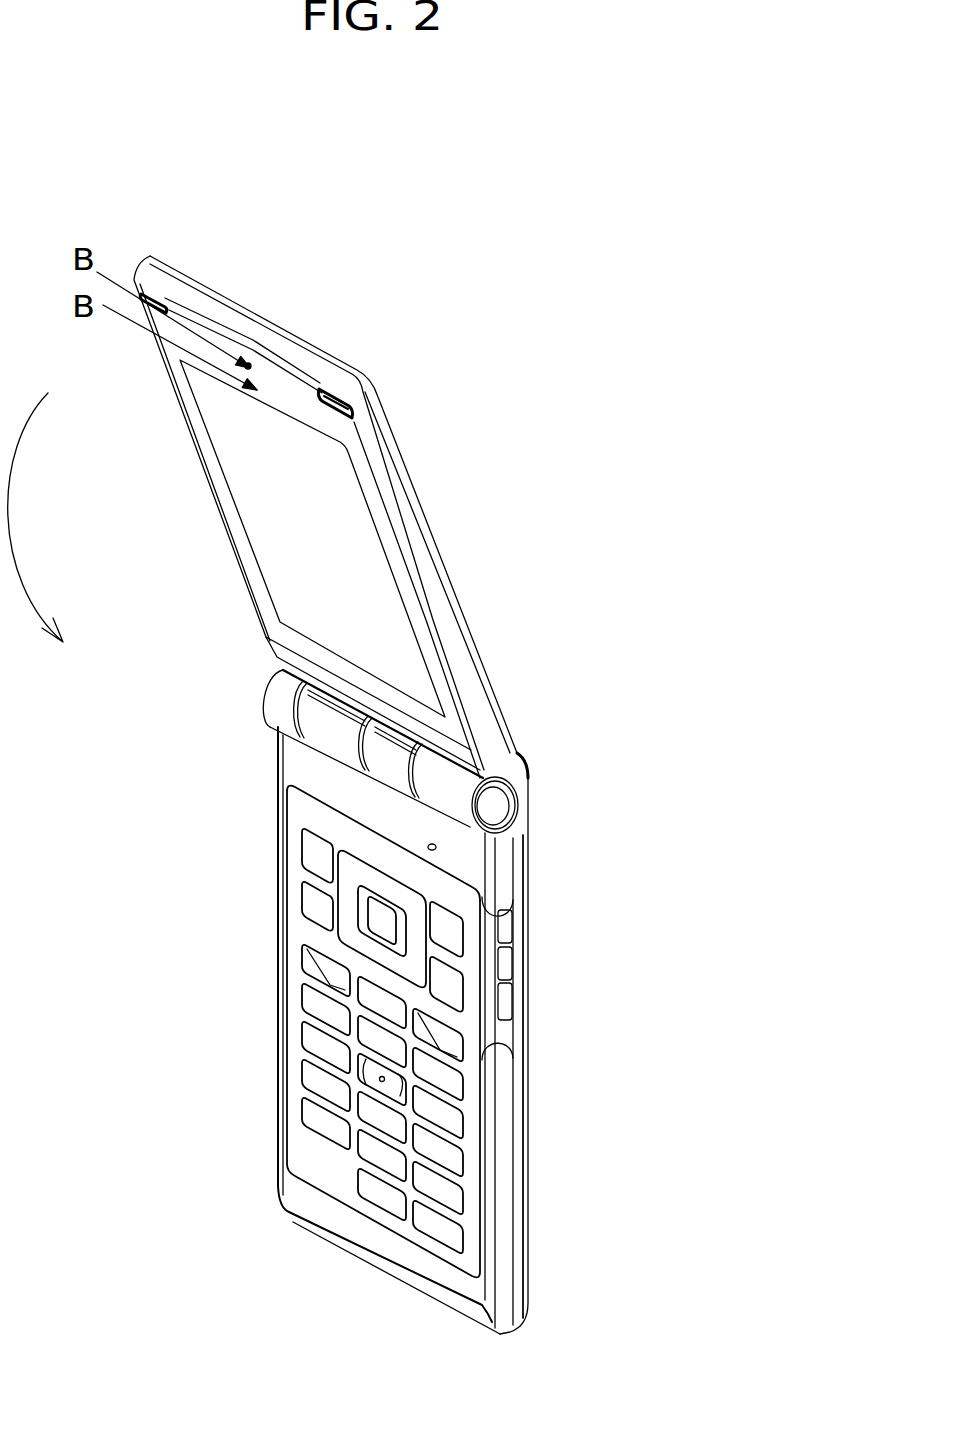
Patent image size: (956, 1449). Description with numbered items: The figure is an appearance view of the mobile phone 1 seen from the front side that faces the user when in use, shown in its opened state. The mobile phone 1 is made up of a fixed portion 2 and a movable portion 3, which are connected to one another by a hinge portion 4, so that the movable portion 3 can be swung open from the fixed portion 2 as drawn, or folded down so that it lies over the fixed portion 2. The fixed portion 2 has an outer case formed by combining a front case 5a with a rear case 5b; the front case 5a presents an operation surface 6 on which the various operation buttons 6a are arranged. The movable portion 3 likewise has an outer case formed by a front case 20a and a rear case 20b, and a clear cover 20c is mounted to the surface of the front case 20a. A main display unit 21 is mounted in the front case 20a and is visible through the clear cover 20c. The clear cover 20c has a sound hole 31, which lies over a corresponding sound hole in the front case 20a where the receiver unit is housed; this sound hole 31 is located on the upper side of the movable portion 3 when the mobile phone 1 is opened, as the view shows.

The mobile phone 1 is at (133, 1343).
The fixed portion 2 is at (525, 1207).
The movable portion 3 is at (480, 655).
The hinge portion 4 is at (500, 805).
The front case 5a is at (488, 1285).
The rear case 5b is at (525, 1283).
The operation surface 6 is at (313, 1157).
The operation buttons 6a is at (345, 936).
The front case 20a is at (373, 443).
The rear case 20b is at (418, 492).
The clear cover 20c is at (293, 383).
The main display unit 21 is at (353, 553).
The sound hole 31 is at (254, 366).